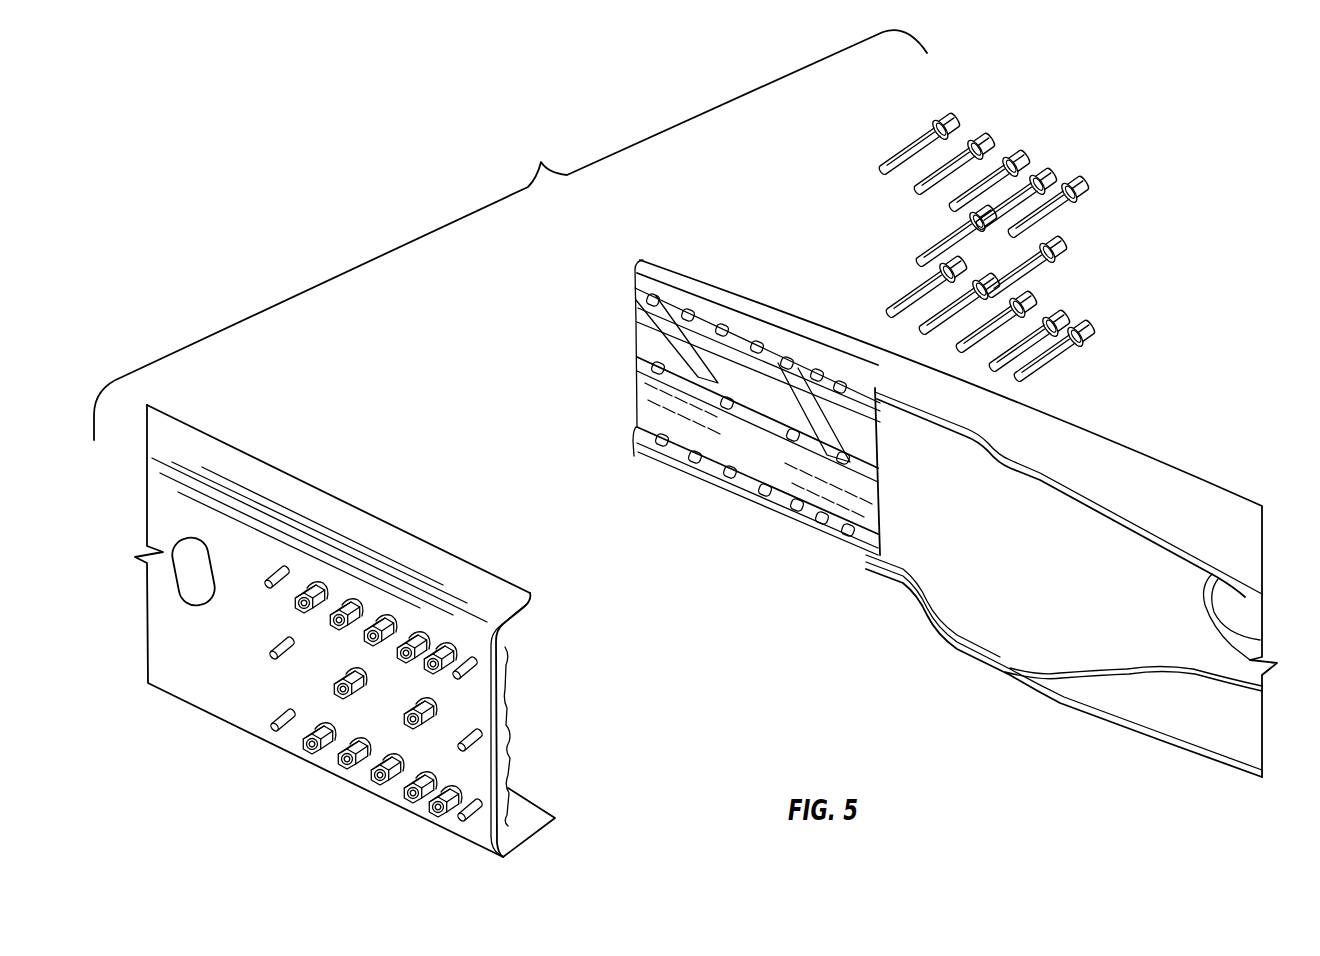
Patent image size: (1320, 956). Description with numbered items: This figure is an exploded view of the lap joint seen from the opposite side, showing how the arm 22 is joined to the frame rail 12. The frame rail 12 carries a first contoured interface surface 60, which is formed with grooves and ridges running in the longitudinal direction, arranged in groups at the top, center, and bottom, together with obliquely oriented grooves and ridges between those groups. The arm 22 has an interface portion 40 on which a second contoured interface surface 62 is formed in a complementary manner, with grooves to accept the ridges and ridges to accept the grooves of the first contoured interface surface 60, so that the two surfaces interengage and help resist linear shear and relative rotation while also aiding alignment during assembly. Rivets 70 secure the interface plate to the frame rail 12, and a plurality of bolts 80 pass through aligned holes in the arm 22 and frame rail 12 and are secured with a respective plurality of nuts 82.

The frame rail 12 is at (247, 457).
The arm 22 is at (928, 649).
The interface portion 40 is at (637, 313).
The first contoured interface surface 60 is at (510, 750).
The second contoured interface surface 62 is at (700, 494).
The rivets 70 is at (484, 672).
The bolts 80 is at (837, 165).
The nuts 82 is at (330, 782).